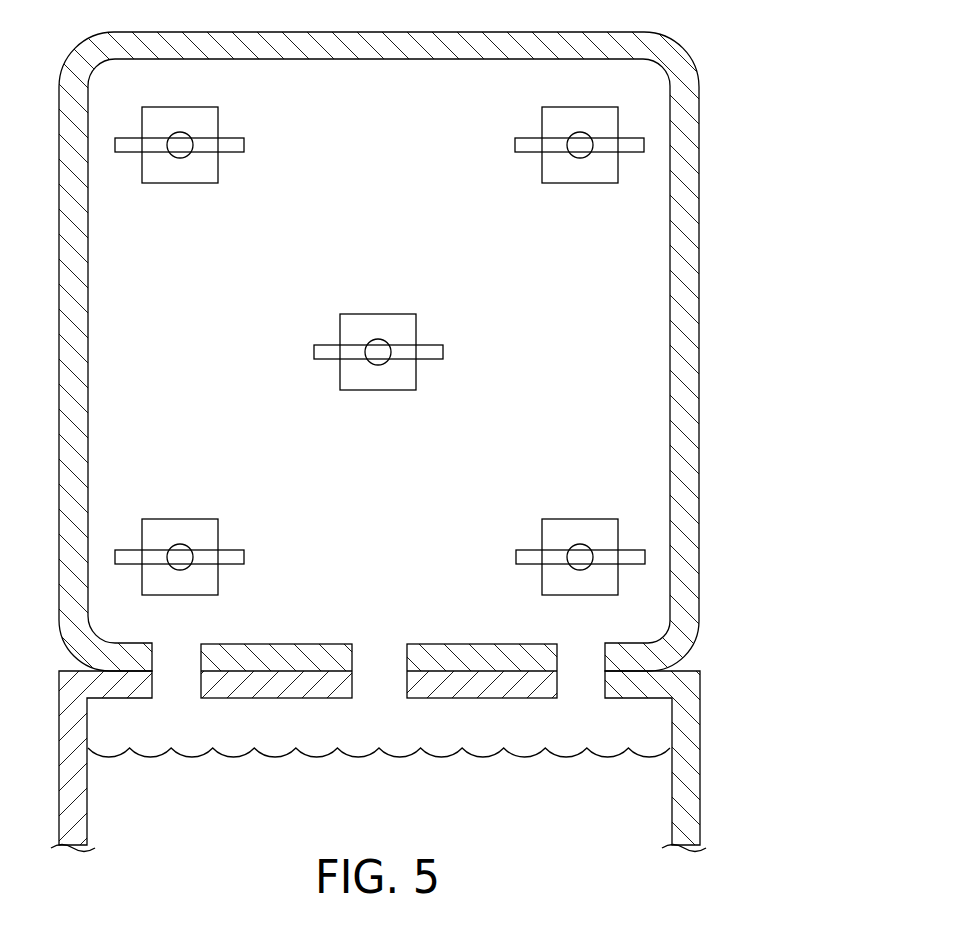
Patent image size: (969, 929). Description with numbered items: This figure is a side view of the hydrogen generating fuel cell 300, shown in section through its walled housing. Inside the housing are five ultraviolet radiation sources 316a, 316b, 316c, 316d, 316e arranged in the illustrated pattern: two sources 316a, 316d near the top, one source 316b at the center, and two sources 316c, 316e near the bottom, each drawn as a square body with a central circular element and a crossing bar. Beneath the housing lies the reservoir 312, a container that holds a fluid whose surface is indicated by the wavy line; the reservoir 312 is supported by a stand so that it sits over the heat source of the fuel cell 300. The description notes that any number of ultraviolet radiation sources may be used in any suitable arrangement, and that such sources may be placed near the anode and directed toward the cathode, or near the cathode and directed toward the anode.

The fuel cell 300 is at (776, 73).
The reservoir 312 is at (403, 814).
The ultraviolet radiation source 316a is at (218, 125).
The ultraviolet radiation source 316b is at (417, 330).
The ultraviolet radiation source 316c is at (218, 534).
The ultraviolet radiation source 316d is at (542, 125).
The ultraviolet radiation source 316e is at (542, 536).